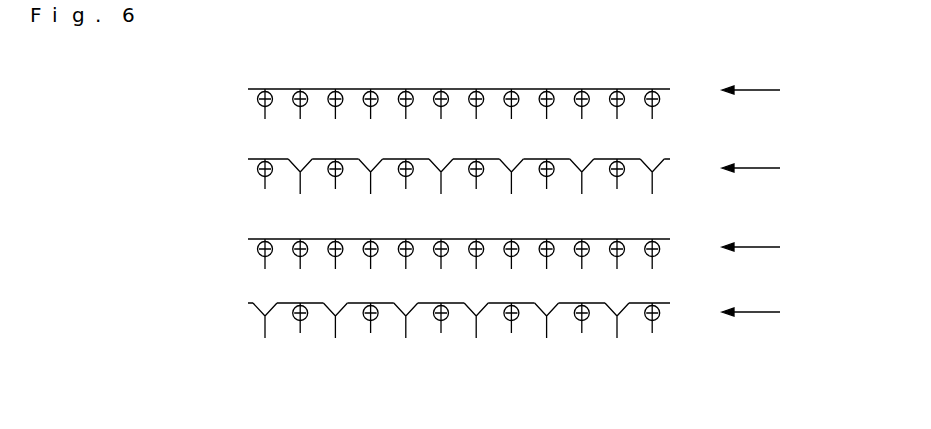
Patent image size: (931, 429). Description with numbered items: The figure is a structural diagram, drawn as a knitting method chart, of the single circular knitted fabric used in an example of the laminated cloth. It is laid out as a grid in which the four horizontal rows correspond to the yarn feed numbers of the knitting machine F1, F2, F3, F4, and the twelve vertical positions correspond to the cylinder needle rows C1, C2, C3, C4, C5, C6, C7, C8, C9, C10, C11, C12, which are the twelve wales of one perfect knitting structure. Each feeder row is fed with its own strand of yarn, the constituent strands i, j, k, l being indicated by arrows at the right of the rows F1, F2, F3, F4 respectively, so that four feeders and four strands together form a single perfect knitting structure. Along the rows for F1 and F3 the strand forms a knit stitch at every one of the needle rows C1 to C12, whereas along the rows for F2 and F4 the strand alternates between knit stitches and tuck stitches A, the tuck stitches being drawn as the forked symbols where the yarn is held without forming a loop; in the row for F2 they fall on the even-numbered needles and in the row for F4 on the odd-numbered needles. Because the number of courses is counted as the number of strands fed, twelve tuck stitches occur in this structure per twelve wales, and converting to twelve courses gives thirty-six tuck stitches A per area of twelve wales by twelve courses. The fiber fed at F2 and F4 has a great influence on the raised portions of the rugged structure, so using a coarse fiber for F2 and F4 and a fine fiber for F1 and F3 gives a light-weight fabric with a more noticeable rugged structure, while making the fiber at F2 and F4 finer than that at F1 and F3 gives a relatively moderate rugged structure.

The yarn feed number of knitting machine F1 is at (424, 104).
The yarn feed number of knitting machine F2 is at (424, 176).
The yarn feed number of knitting machine F3 is at (424, 253).
The yarn feed number of knitting machine F4 is at (424, 323).
The cylinder needle row C1 is at (266, 375).
The cylinder needle row C2 is at (300, 375).
The cylinder needle row C3 is at (338, 375).
The cylinder needle row C4 is at (371, 375).
The cylinder needle row C5 is at (408, 375).
The cylinder needle row C6 is at (441, 375).
The cylinder needle row C7 is at (481, 375).
The cylinder needle row C8 is at (515, 375).
The cylinder needle row C9 is at (548, 375).
The cylinder needle row C10 is at (587, 373).
The cylinder needle row C11 is at (619, 373).
The cylinder needle row C12 is at (651, 373).
The constituent strand of yarn i is at (770, 90).
The constituent strand of yarn j is at (770, 169).
The constituent strand of yarn k is at (772, 245).
The constituent strand of yarn l is at (770, 315).
The tuck stitch A is at (579, 166).